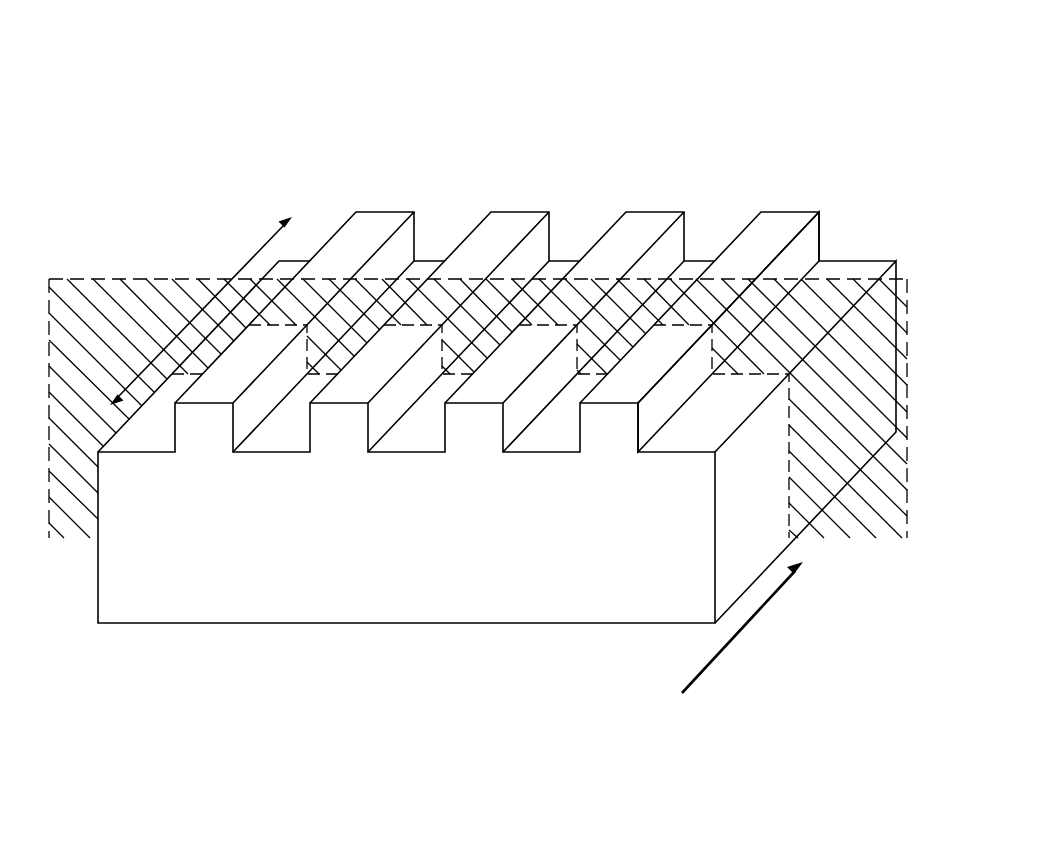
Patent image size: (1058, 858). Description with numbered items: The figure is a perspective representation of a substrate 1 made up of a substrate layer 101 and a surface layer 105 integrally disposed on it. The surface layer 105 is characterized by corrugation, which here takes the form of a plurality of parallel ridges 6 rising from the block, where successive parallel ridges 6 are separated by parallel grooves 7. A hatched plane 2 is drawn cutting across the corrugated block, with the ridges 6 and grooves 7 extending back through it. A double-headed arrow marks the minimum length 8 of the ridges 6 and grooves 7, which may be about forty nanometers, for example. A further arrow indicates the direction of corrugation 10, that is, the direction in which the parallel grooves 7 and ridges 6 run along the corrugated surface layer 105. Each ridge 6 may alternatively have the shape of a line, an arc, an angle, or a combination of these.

The substrate 1 is at (172, 126).
The cross-section plane 2 is at (97, 298).
The parallel ridges 6 is at (559, 304).
The parallel grooves 7 is at (442, 247).
The minimum length 8 is at (253, 252).
The direction of corrugation 10 is at (732, 643).
The substrate layer 101 is at (437, 551).
The surface layer 105 is at (814, 237).